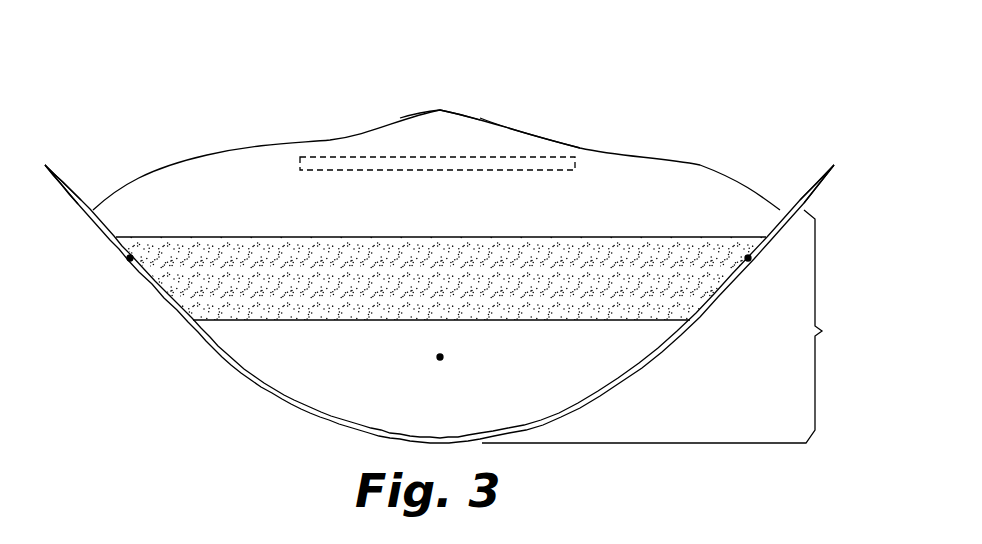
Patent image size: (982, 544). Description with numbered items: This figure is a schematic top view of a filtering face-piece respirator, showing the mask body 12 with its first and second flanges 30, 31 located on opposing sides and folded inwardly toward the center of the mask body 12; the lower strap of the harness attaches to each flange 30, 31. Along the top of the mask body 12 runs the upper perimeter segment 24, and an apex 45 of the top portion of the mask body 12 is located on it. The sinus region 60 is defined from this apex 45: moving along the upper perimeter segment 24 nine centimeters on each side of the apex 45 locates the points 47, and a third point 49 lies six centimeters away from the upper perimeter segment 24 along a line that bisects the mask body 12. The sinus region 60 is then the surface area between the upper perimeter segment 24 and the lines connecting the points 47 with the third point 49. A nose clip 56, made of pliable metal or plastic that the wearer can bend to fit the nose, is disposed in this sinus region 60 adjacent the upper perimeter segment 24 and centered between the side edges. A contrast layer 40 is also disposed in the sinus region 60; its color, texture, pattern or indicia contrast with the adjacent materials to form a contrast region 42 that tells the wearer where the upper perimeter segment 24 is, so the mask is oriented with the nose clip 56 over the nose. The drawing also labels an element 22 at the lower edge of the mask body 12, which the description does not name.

The absorbent article / product 12 is at (683, 73).
The backsheet / support strip 22 is at (411, 436).
The topsheet / cover layer 24 is at (173, 167).
The first side edge 30 is at (63, 181).
The second side edge 31 is at (820, 173).
The absorbent core layer 40 is at (182, 303).
The depth dimension 42 is at (670, 326).
The peak / apex 45 is at (440, 110).
The attachment points 47 is at (128, 260).
The void / cavity 49 is at (442, 360).
The hidden element (dashed) 56 is at (365, 162).
The raised portion 60 is at (527, 124).